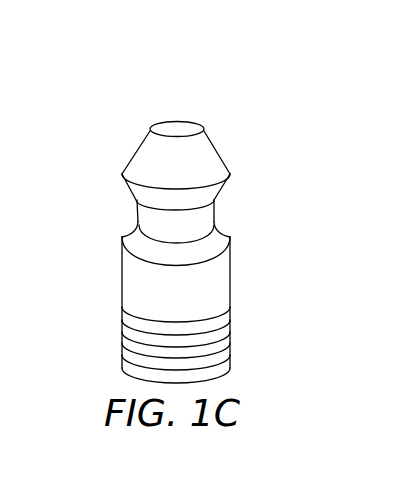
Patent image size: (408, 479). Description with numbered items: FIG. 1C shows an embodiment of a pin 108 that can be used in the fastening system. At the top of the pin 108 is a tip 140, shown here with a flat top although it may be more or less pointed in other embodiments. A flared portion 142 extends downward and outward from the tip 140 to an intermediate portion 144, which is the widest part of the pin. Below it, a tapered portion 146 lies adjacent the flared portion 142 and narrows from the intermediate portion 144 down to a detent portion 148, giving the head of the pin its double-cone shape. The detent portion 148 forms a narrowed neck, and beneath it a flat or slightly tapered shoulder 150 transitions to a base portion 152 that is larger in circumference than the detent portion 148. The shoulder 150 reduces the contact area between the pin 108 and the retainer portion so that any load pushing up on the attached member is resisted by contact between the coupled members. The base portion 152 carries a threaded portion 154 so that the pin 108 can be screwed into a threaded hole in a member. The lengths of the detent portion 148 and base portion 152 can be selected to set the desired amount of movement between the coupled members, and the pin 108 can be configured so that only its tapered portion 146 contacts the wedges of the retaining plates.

The pin 108 is at (126, 110).
The tip 140 is at (178, 122).
The flared portion 142 is at (216, 152).
The intermediate portion 144 is at (231, 173).
The tapered portion 146 is at (221, 190).
The detent portion 148 is at (139, 209).
The shoulder 150 is at (126, 232).
The base portion 152 is at (122, 280).
The threaded portion 154 is at (122, 316).